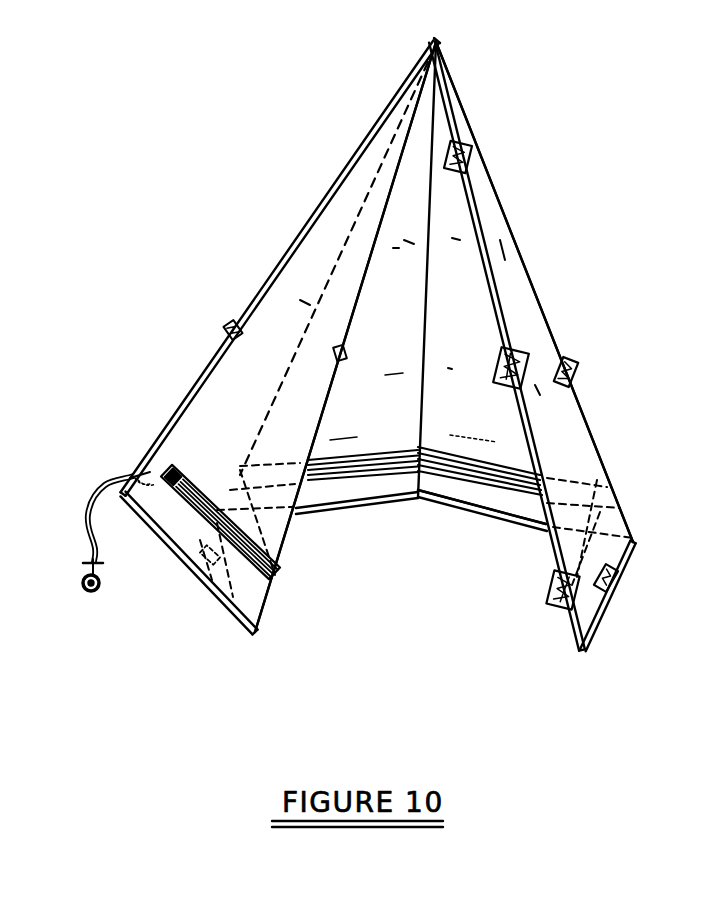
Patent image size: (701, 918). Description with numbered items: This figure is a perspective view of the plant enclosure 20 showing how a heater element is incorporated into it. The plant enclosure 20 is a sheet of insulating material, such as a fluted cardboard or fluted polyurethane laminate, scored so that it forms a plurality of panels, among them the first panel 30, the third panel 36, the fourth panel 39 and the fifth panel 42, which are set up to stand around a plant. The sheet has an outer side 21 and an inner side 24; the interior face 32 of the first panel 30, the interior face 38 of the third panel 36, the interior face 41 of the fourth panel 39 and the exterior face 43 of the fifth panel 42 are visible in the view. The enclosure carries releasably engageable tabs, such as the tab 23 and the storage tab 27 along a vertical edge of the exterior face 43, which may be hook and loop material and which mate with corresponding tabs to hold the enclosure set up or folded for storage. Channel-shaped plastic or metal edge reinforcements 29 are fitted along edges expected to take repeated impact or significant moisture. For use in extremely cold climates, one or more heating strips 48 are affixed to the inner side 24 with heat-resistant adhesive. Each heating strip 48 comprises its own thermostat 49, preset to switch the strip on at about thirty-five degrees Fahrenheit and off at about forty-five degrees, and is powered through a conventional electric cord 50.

The plant enclosure 20 is at (549, 168).
The outer side 21 is at (567, 435).
The tab 23 is at (625, 575).
The inner side 24 is at (223, 397).
The storage tab 27 is at (571, 370).
The edge reinforcement 29 is at (490, 292).
The first panel 30 is at (312, 256).
The interior face of the first panel 32 is at (298, 318).
The third panel 36 is at (390, 286).
The interior face of the third panel 38 is at (418, 243).
The fourth panel 39 is at (490, 497).
The interior face of the fourth panel 41 is at (471, 405).
The fifth panel 42 is at (495, 225).
The exterior face of the fifth panel 43 is at (541, 323).
The heating strip 48 is at (373, 458).
The thermostat 49 is at (135, 472).
The electric cord 50 is at (78, 522).